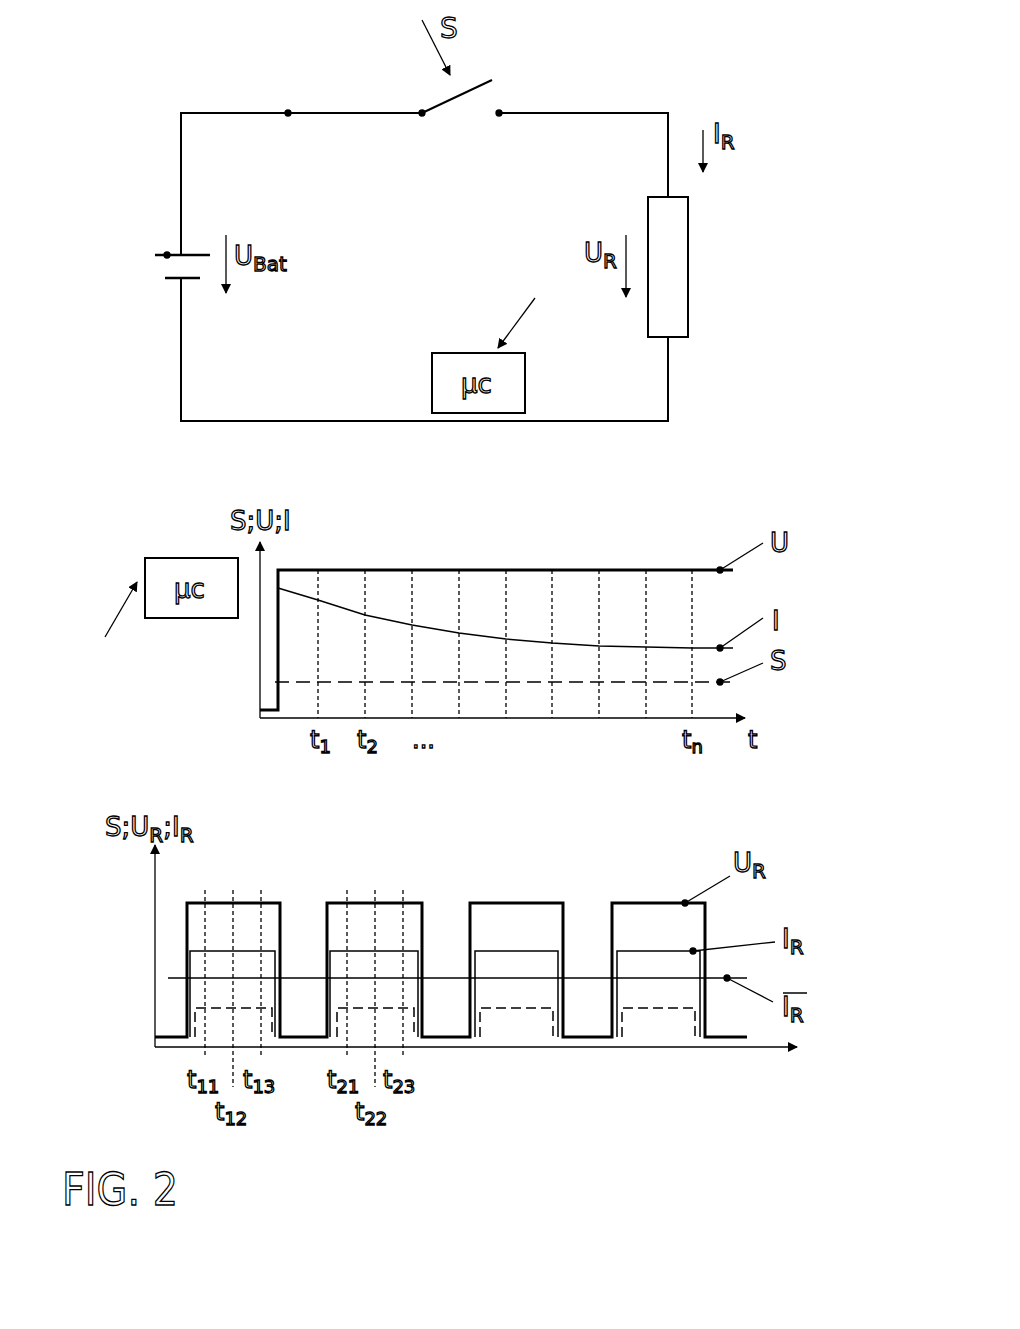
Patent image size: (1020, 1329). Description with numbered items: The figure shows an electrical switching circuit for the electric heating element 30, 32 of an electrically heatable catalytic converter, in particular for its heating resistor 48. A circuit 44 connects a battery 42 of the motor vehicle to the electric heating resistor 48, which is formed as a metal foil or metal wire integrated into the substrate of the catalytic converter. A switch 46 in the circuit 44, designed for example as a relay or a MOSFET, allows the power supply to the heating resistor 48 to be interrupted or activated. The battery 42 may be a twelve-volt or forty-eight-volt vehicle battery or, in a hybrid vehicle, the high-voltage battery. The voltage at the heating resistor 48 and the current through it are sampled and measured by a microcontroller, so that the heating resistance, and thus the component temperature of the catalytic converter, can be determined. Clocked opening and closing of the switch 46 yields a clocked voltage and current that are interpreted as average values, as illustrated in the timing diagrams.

The electric heating element 30 is at (672, 227).
The electric heating element 32 is at (668, 267).
The battery 42 is at (167, 255).
The circuit 44 is at (288, 113).
The switch 46 is at (422, 113).
The heating resistor 48 is at (672, 266).